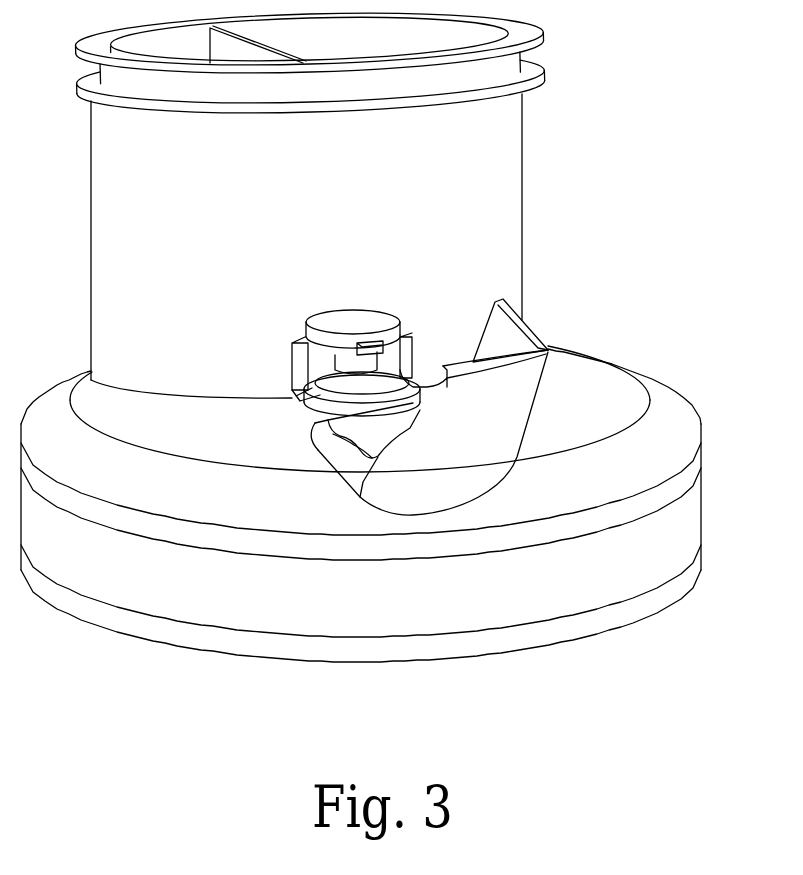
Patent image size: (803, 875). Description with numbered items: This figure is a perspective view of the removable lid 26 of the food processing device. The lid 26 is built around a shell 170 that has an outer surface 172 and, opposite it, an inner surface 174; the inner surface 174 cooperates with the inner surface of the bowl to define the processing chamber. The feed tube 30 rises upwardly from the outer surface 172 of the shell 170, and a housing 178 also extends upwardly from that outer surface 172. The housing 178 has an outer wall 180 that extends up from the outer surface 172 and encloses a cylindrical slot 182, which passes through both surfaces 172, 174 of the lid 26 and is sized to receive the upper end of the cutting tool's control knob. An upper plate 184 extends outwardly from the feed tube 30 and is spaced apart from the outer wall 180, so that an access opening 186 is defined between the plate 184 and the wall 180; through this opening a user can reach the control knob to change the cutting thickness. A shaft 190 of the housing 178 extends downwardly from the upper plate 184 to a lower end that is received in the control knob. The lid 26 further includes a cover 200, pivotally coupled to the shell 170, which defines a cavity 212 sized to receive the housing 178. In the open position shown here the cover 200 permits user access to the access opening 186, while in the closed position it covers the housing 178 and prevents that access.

The removable lid 26 is at (629, 146).
The feed tube 30 is at (505, 153).
The shell 170 is at (658, 383).
The outer surface 172 is at (590, 374).
The inner surface 174 is at (510, 654).
The housing 178 is at (292, 364).
The outer wall 180 is at (292, 395).
The cylindrical slot 182 is at (375, 388).
The upper plate 184 is at (330, 318).
The access opening 186 is at (316, 396).
The shaft 190 is at (381, 342).
The cover 200 is at (393, 497).
The cavity 212 is at (494, 352).